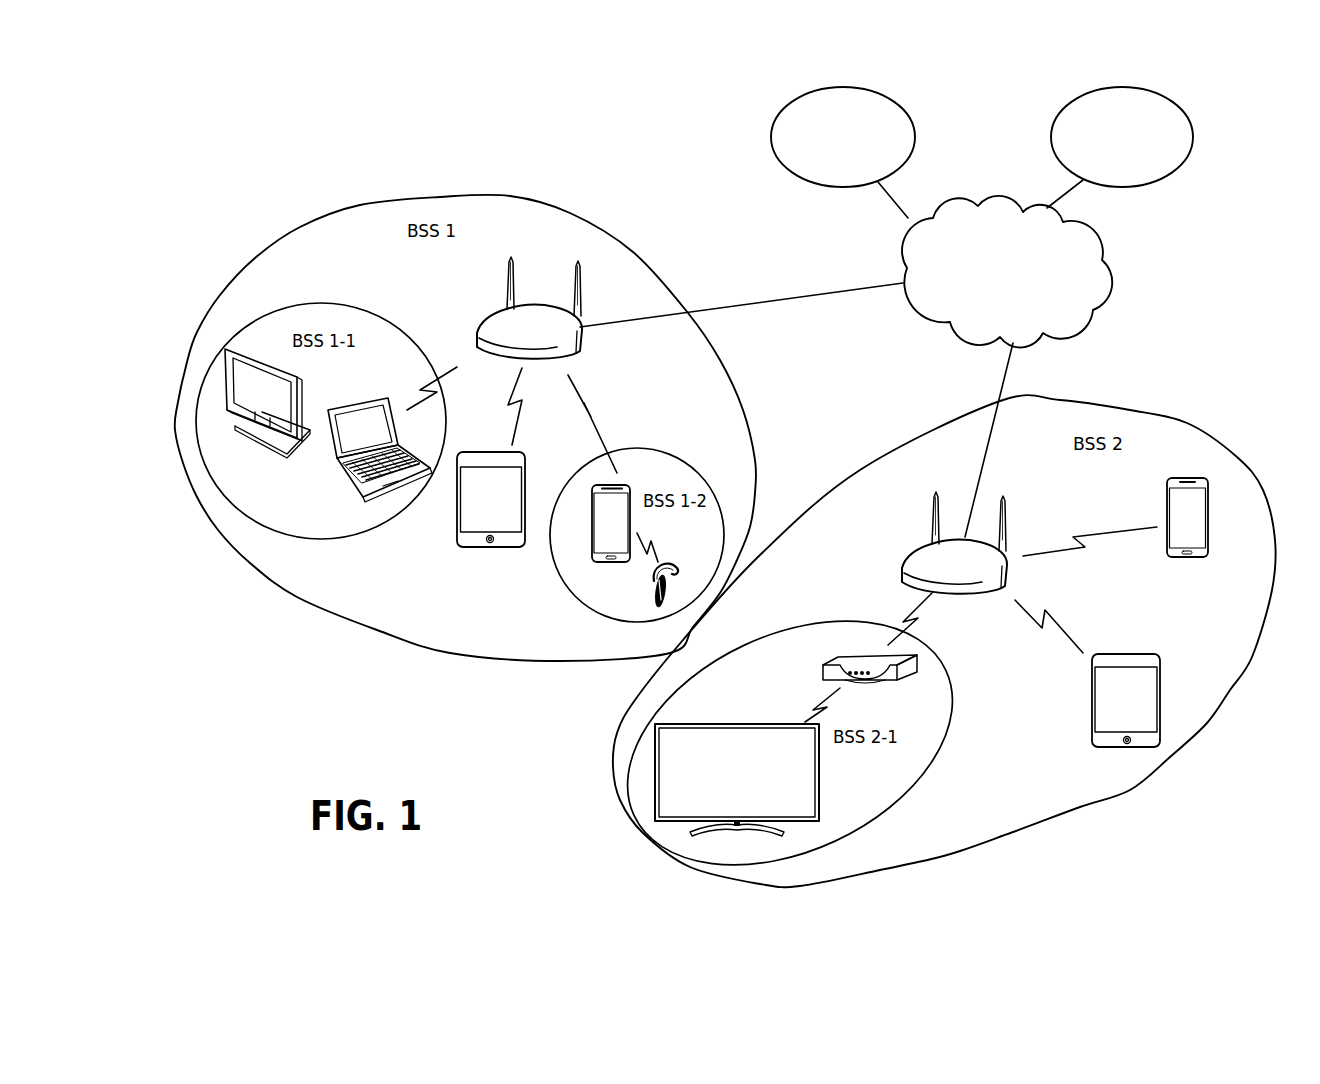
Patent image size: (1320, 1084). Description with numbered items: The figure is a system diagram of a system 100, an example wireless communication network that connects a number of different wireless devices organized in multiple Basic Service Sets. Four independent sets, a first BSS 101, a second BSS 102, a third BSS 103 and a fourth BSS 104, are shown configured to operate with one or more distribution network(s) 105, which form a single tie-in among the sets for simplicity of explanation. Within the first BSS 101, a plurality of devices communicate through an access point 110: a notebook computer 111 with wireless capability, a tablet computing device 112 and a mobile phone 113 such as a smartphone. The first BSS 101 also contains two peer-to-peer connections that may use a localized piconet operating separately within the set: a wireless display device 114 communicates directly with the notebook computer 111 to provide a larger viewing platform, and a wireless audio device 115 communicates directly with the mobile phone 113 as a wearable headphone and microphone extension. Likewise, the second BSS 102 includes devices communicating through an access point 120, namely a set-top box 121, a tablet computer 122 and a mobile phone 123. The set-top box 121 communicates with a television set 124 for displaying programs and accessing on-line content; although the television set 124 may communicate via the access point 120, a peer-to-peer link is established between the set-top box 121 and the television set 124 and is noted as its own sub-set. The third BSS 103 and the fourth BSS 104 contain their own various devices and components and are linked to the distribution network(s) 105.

The system 100 is at (1178, 262).
The BSS1 101 is at (560, 228).
The BSS2 102 is at (1180, 440).
The BSS3 103 is at (912, 118).
The BSS4 104 is at (1192, 118).
The distribution network(s) 105 is at (1093, 242).
The access point 110 is at (583, 346).
The notebook computer 111 is at (345, 480).
The tablet computing device 112 is at (457, 537).
The mobile phone 113 is at (590, 538).
The wireless display device 114 is at (257, 437).
The wireless audio device 115 is at (673, 587).
The access point 120 is at (1009, 568).
The set-top box 121 is at (912, 658).
The tablet computer 122 is at (1125, 653).
The mobile phone 123 is at (1192, 560).
The television set 124 is at (720, 724).